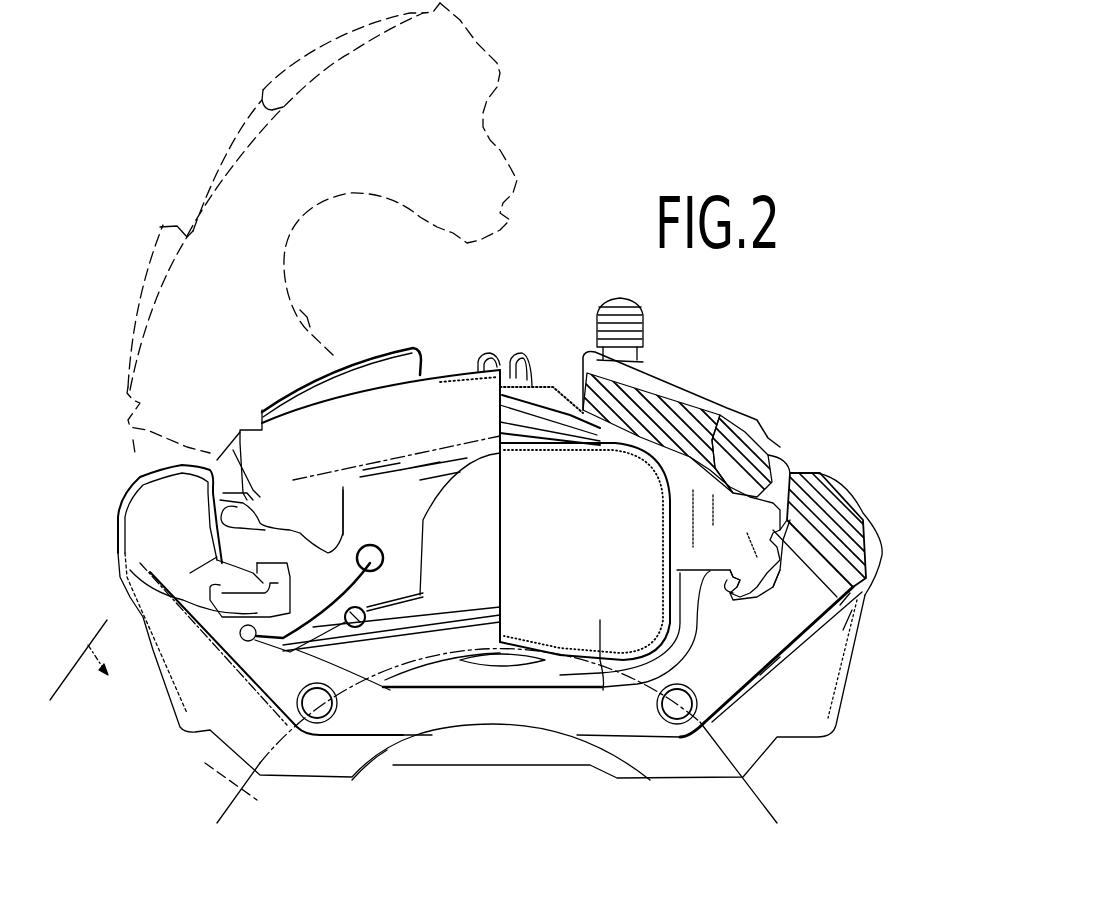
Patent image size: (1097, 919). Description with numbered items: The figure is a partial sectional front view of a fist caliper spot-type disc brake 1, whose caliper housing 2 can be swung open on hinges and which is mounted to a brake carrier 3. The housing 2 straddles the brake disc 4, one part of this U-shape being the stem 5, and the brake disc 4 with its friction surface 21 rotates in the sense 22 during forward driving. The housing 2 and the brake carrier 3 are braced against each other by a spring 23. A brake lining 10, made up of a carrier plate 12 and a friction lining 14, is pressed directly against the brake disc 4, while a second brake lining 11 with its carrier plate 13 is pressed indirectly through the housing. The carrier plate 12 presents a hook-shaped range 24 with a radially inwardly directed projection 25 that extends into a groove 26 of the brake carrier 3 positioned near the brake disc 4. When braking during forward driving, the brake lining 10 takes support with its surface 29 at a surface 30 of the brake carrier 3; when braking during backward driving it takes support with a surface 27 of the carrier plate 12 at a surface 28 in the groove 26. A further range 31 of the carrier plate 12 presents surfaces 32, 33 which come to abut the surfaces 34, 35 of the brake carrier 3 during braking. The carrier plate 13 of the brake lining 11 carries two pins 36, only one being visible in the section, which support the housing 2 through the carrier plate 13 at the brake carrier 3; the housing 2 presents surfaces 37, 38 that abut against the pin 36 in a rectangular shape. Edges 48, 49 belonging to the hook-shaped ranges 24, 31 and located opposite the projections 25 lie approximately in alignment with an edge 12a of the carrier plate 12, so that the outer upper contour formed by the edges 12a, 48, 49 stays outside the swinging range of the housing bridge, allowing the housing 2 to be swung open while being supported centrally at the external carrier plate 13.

The spot-type disc brake 1 is at (853, 466).
The caliper housing 2 is at (443, 242).
The brake carrier 3 is at (807, 720).
The brake disc 4 is at (90, 645).
The stem 5 is at (380, 493).
The brake lining 10 is at (570, 671).
The brake lining 11 is at (457, 650).
The carrier plate 12 is at (717, 530).
The edge of the carrier plate 12a is at (767, 487).
The carrier plate 13 is at (423, 647).
The friction lining 14 is at (603, 690).
The friction surface 21 is at (243, 790).
The sense of rotation 22 is at (686, 293).
The spring 23 is at (249, 641).
The hook-shaped range 24 is at (850, 507).
The projection 25 is at (773, 587).
The groove 26 is at (773, 653).
The surface 27 is at (850, 593).
The surface 28 is at (843, 630).
The surface 29 is at (710, 570).
The surface 30 is at (733, 600).
The range of the carrier plate 31 is at (250, 570).
The surface 32 is at (237, 507).
The surface 33 is at (230, 567).
The surface 34 is at (190, 573).
The surface 35 is at (217, 527).
The pin 36 is at (357, 627).
The surface 37 is at (422, 595).
The surface 38 is at (380, 590).
The edge 48 is at (780, 470).
The edge 49 is at (217, 457).